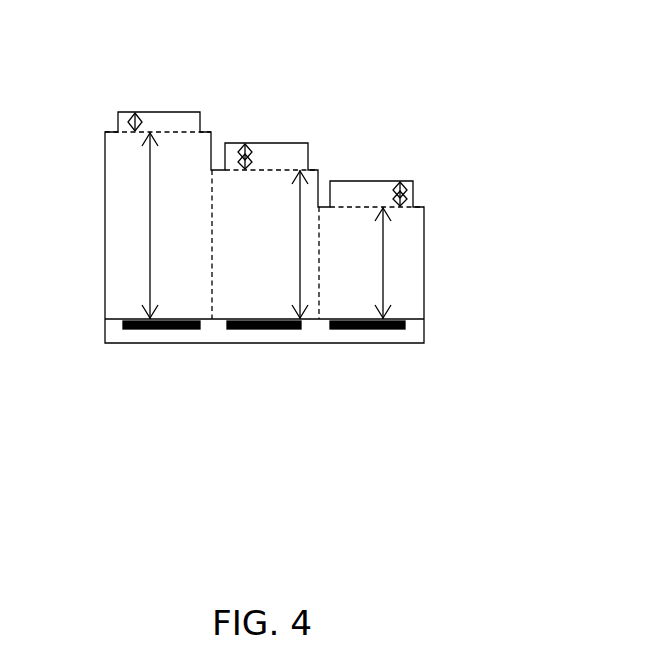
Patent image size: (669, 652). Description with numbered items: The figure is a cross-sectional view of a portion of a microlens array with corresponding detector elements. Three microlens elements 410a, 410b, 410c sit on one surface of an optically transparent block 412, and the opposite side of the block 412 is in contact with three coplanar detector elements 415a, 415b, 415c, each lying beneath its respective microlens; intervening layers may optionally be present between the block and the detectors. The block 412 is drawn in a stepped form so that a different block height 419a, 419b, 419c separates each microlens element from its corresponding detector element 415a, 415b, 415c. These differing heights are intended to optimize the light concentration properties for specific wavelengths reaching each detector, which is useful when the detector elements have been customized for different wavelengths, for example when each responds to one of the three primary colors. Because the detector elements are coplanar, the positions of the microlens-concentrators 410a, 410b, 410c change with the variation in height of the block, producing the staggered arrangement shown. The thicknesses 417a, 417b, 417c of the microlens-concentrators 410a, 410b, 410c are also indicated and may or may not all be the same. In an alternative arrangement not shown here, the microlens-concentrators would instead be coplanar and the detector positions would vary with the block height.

The microlens element 410a is at (165, 119).
The microlens element 410b is at (277, 157).
The microlens element 410c is at (352, 190).
The optically transparent block 412 is at (270, 242).
The detector element 415a is at (170, 329).
The detector element 415b is at (280, 329).
The detector element 415c is at (398, 330).
The thickness 417a is at (135, 120).
The thickness 417b is at (245, 150).
The thickness 417c is at (400, 190).
The block height 419a is at (143, 247).
The block height 419b is at (303, 268).
The block height 419c is at (387, 293).